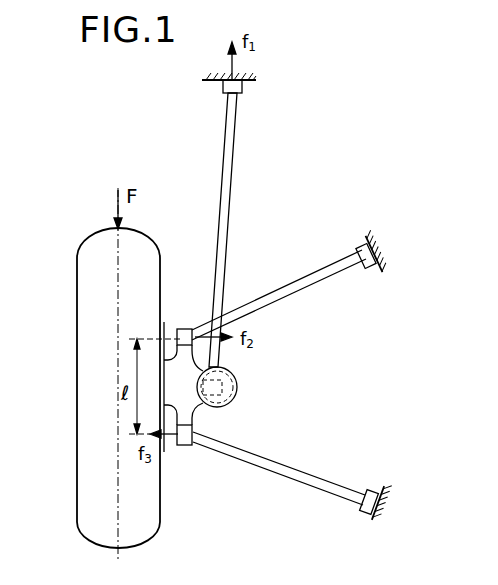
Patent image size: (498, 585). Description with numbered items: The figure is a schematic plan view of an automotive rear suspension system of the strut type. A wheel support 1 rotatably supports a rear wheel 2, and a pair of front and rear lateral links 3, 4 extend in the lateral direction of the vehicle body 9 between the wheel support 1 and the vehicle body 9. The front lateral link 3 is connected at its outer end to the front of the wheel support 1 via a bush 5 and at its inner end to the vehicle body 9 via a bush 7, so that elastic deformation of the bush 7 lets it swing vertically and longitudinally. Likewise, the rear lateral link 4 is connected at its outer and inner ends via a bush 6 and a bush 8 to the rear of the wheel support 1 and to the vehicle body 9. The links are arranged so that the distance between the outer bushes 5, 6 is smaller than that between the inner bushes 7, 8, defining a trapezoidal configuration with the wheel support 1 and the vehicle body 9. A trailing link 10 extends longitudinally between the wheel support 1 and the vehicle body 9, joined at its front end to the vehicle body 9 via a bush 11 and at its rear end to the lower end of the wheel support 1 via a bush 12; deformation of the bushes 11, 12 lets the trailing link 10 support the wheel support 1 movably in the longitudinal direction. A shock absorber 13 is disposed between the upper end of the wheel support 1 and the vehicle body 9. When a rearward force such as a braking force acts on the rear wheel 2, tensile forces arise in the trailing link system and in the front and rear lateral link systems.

The wheel support 1 is at (196, 410).
The rear wheel 2 is at (78, 268).
The front lateral link 3 is at (296, 300).
The rear lateral link 4 is at (277, 472).
The bush 5 is at (183, 328).
The bush 6 is at (192, 447).
The bush 7 is at (359, 247).
The bush 8 is at (372, 516).
The vehicle body 9 is at (252, 83).
The trailing link 10 is at (233, 200).
The bush 11 is at (222, 88).
The bush 12 is at (238, 372).
The shock absorber 13 is at (238, 389).